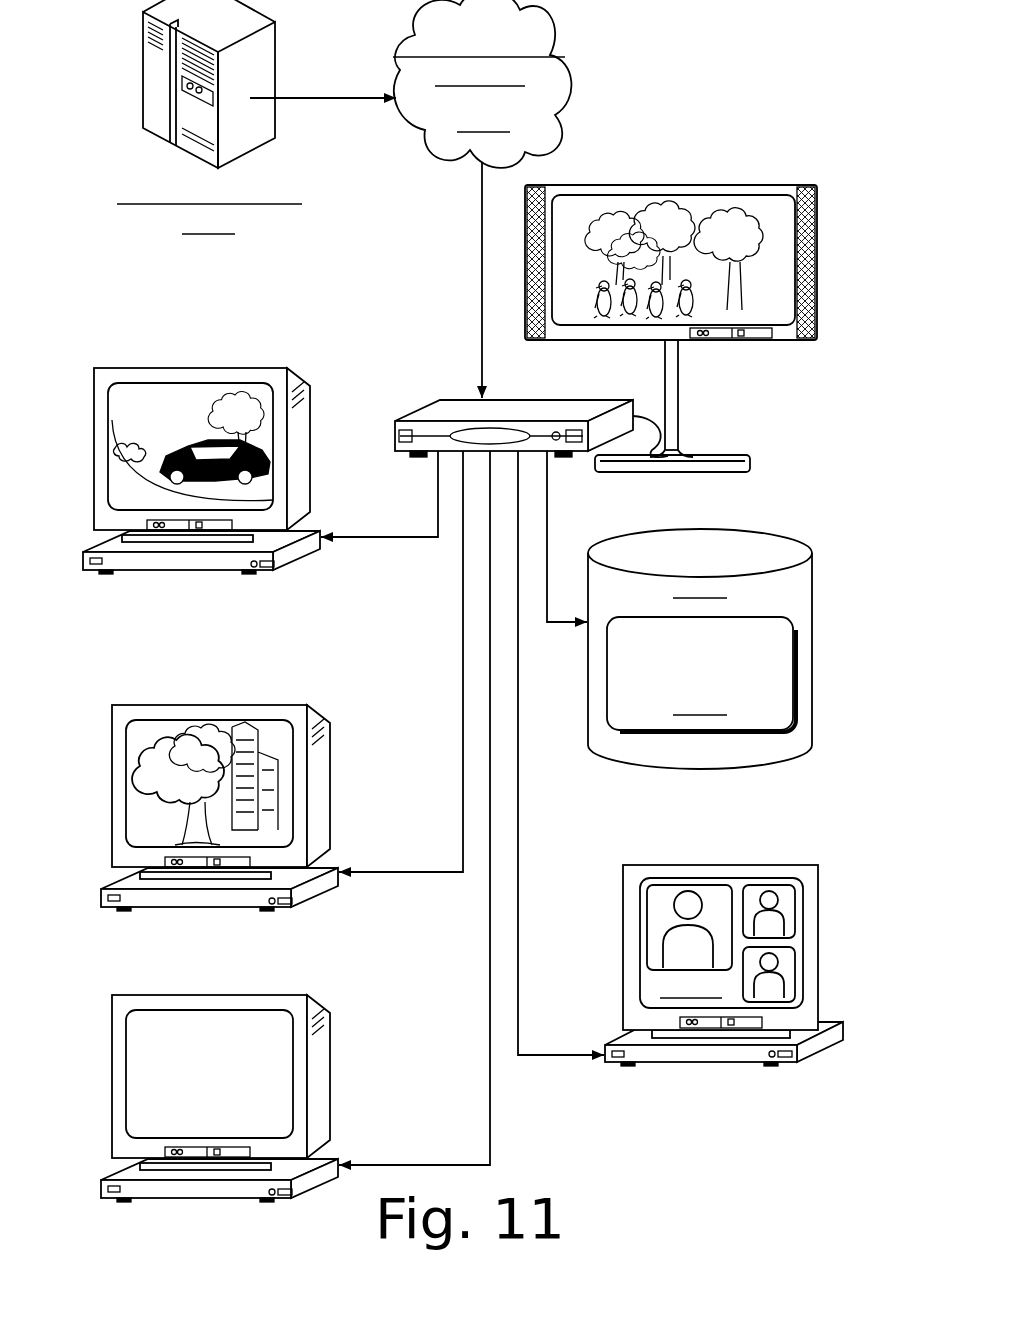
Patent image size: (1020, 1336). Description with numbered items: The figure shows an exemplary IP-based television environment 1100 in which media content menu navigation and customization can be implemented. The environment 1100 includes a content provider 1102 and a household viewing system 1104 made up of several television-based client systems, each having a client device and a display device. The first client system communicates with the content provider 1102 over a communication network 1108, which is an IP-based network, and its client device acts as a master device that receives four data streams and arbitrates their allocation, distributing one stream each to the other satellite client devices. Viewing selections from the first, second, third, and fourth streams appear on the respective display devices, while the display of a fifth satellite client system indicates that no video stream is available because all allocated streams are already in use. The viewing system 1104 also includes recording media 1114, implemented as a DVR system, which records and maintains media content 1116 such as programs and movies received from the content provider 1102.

The IP-based television (IPTV) environment 1100 is at (659, 52).
The content provider 1102 is at (256, 117).
The viewing system 1104 is at (430, 294).
The communication network 1108 is at (482, 84).
The recording media 1114 is at (700, 649).
The media content 1116 is at (701, 674).